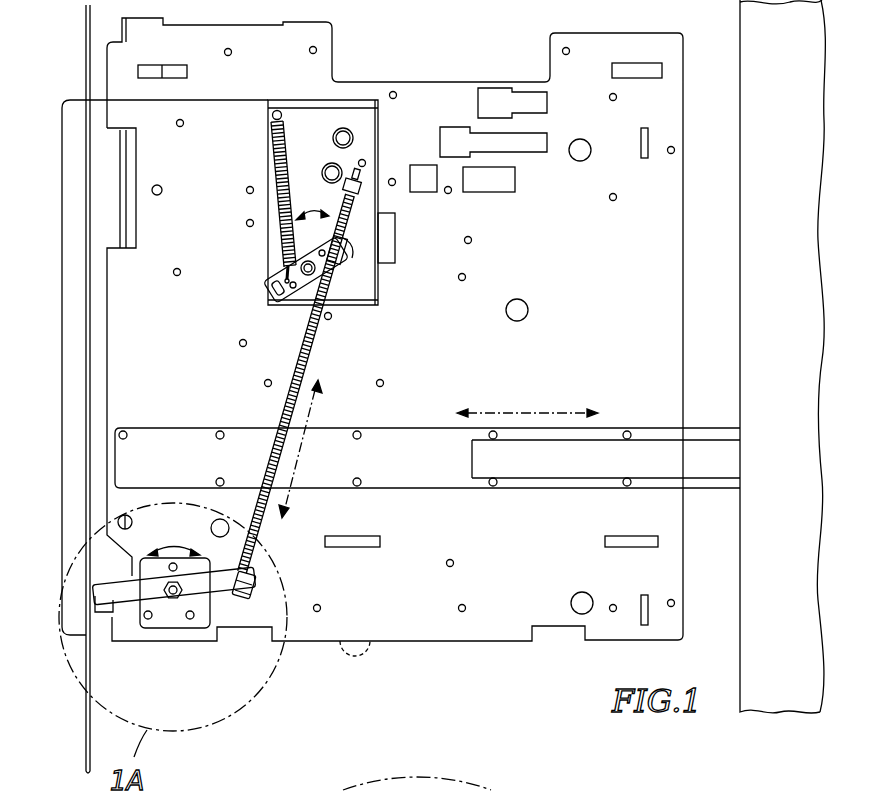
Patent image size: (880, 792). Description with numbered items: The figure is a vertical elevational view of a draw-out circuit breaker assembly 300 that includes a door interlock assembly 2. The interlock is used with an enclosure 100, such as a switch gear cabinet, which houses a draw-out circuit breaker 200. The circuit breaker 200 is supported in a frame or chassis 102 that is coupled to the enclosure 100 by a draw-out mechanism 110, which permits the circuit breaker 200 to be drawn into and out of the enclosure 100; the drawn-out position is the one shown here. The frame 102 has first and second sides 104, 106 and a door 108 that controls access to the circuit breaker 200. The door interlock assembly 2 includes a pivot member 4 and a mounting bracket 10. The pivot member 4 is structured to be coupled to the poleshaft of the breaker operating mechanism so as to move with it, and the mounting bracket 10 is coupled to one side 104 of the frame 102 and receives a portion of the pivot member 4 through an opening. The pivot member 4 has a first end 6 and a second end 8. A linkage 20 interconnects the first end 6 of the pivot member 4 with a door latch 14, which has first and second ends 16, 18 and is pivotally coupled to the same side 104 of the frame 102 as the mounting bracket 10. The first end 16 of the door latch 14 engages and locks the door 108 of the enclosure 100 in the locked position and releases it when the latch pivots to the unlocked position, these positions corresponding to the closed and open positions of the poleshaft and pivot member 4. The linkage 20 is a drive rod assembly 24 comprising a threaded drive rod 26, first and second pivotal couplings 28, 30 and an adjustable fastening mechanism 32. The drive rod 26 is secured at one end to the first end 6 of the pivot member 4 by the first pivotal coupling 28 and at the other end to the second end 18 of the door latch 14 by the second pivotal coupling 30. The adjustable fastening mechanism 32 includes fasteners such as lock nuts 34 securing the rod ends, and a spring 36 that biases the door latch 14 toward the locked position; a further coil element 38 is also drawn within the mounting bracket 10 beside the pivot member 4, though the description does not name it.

The enclosure 100 is at (78, 64).
The door 108 is at (86, 88).
The door interlock assembly 2 is at (66, 350).
The draw-out circuit breaker 200 is at (437, 80).
The draw-out mechanism 110 is at (536, 508).
The frame 102 is at (604, 282).
The mounting bracket 10 is at (300, 122).
The spring 38 is at (272, 172).
The spring 36 is at (340, 200).
The linkage 20 is at (270, 406).
The lock nuts 34 is at (363, 183).
The adjustable fastening mechanism 32 is at (366, 216).
The pivot member 4 is at (303, 282).
The first pivotal coupling 28 is at (342, 265).
The first end of pivot member 6 is at (364, 266).
The drive rod assembly 24 is at (390, 325).
The threaded drive rod 26 is at (318, 348).
The second end of pivot member 8 is at (248, 266).
The first end of door latch 16 is at (95, 571).
The door latch 14 is at (138, 600).
The second pivotal coupling 30 is at (257, 578).
The second end of door latch 18 is at (259, 610).
The second side of frame 106 is at (362, 650).
The first side of frame 104 is at (443, 627).
The draw-out circuit breaker assembly 300 is at (564, 691).